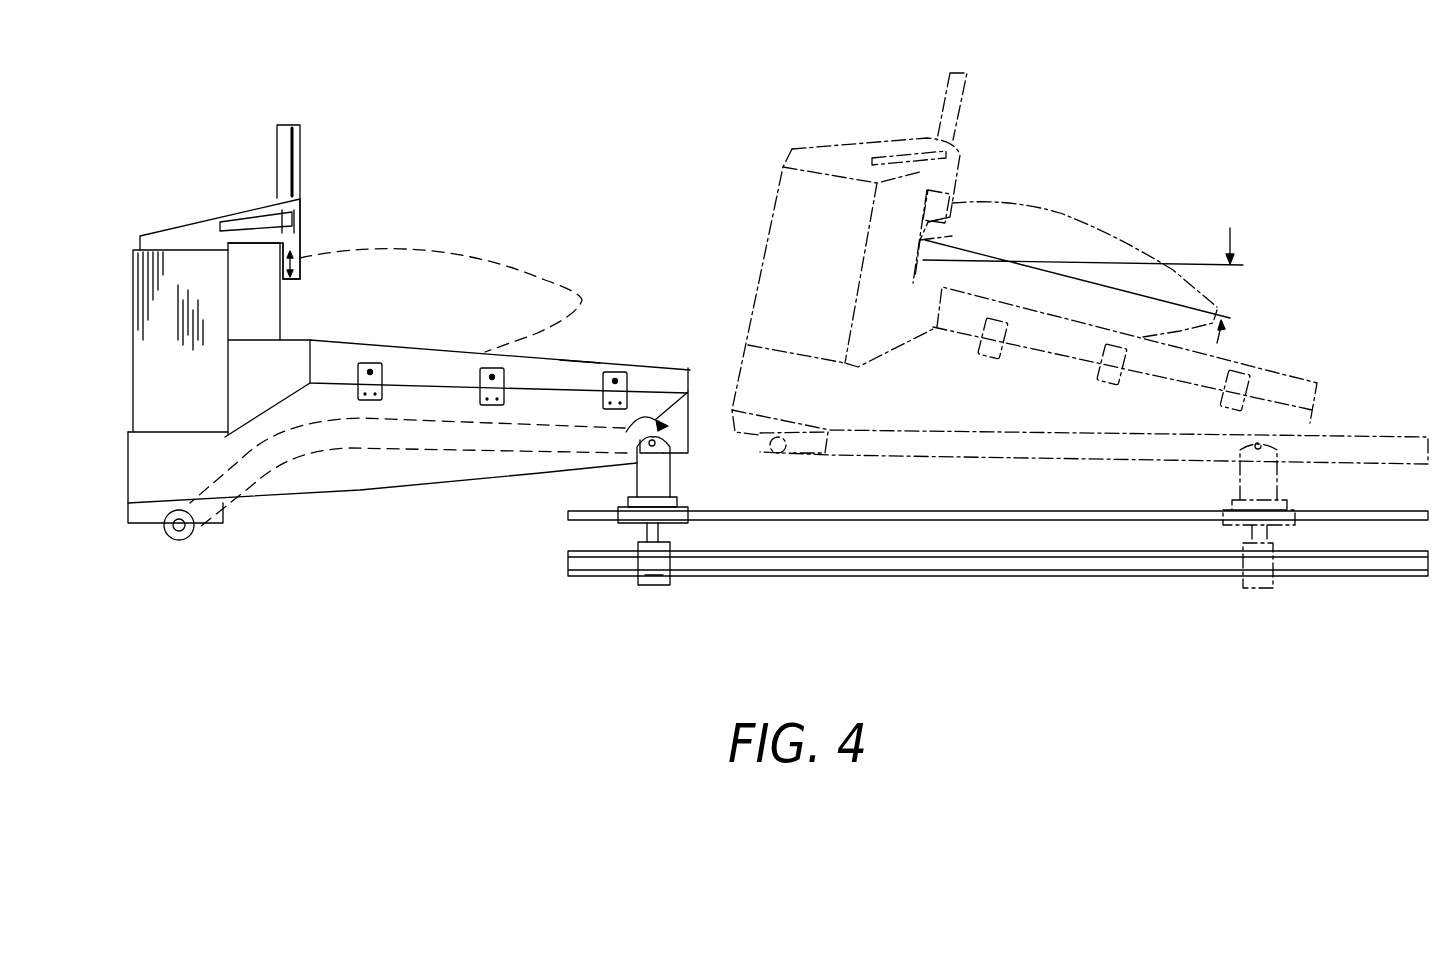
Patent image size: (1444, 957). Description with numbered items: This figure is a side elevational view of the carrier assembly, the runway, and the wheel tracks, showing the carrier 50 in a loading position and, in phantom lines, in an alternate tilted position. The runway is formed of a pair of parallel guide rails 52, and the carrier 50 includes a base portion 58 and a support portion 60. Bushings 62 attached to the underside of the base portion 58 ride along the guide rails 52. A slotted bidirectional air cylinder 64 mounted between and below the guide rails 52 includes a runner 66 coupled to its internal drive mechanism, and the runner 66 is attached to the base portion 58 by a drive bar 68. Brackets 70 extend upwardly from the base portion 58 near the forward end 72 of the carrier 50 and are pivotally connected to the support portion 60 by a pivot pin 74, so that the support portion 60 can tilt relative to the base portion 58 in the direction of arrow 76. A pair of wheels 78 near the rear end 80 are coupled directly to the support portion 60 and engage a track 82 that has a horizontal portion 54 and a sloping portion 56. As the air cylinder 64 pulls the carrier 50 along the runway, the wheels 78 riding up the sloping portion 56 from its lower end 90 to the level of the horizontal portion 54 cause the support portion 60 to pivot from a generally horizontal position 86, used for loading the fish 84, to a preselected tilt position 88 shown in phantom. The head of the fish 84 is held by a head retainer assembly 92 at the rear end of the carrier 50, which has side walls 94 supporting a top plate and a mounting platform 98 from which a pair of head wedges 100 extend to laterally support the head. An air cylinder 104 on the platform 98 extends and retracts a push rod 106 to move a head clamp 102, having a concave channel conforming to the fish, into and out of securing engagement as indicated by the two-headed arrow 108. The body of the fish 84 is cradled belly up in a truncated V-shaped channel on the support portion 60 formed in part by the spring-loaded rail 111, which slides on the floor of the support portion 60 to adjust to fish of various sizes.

The carrier 50 is at (358, 490).
The guide rails 52 is at (965, 512).
The horizontal portion 54 is at (517, 442).
The sloping portion 56 is at (233, 483).
The base portion 58 is at (683, 503).
The support portion 60 is at (652, 372).
The bushings 62 is at (685, 530).
The slotted bidirectional air cylinder 64 is at (873, 565).
The runner 66 is at (653, 573).
The drive bar 68 is at (648, 530).
The brackets 70 is at (660, 477).
The forward end 72 is at (688, 378).
The pivot pin 74 is at (650, 446).
The arrow 76 is at (686, 390).
The wheels 78 is at (182, 543).
The rear end 80 is at (135, 487).
The track 82 is at (443, 442).
The fish 84 is at (440, 252).
The generally horizontal position 86 is at (605, 257).
The preselected tilt position 88 is at (1197, 242).
The lower end 90 is at (164, 531).
The head retainer assembly 92 is at (318, 202).
The side walls 94 is at (147, 373).
The mounting platform 98 is at (185, 225).
The head wedges 100 is at (255, 328).
The head clamp 102 is at (300, 282).
The air cylinder 104 is at (298, 142).
The push rod 106 is at (298, 218).
The two-headed arrow 108 is at (300, 263).
The rail 111 is at (581, 363).